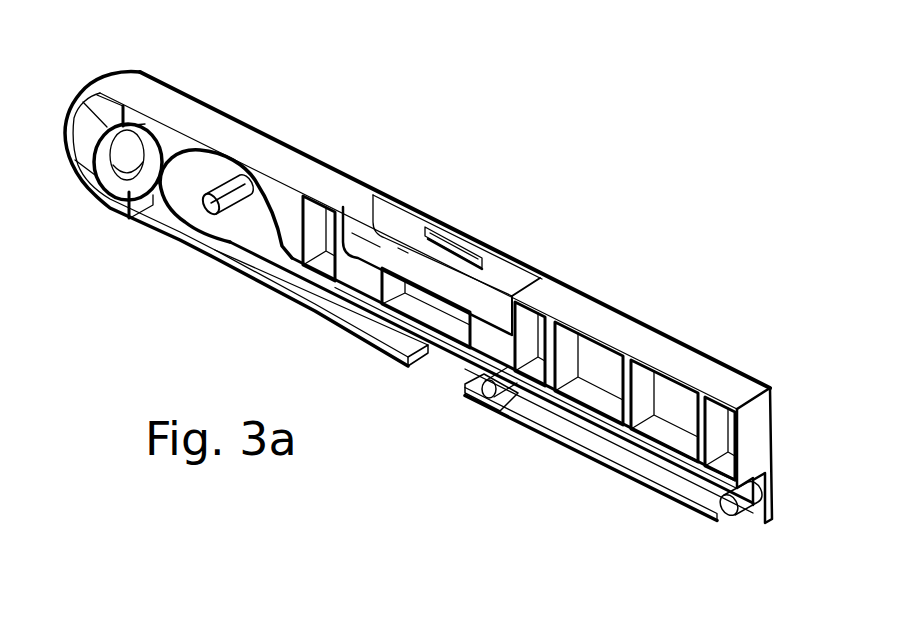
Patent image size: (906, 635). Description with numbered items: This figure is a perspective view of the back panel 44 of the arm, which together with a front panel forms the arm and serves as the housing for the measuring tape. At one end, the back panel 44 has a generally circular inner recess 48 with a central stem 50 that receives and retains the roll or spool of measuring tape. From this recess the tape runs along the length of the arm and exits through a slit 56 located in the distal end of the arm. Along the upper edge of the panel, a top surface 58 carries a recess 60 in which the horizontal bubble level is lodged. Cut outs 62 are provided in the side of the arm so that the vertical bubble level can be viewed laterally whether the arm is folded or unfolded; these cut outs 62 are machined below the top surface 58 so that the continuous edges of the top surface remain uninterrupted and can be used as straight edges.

The back panel 44 is at (742, 372).
The generally circular inner recess 48 is at (268, 196).
The stem 50 is at (218, 186).
The slit 56 is at (744, 524).
The top surface 58 is at (676, 348).
The recess 60 is at (518, 276).
The cut outs 62 is at (458, 220).